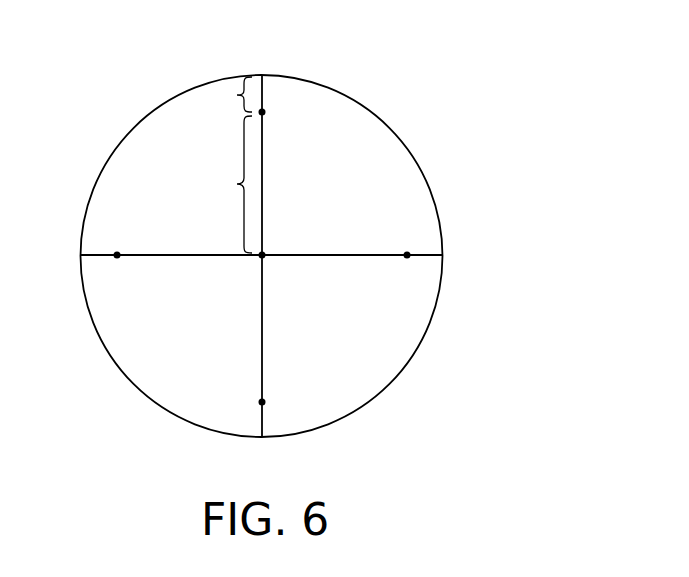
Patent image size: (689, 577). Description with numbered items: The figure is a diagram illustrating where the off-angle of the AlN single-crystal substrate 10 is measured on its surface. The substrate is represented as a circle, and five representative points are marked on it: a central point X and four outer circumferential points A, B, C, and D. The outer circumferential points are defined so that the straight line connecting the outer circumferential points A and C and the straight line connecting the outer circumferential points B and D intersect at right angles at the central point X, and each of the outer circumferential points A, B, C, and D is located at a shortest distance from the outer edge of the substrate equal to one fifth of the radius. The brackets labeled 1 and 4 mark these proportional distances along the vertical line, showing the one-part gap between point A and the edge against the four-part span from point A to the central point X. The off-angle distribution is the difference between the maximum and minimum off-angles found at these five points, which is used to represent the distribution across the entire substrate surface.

The AlN single-crystal substrate 10 is at (462, 99).
The first distance 1 is at (236, 95).
The second distance 4 is at (236, 184).
The outer circumferential point A is at (262, 112).
The outer circumferential point B is at (117, 255).
The outer circumferential point C is at (262, 402).
The outer circumferential point D is at (407, 255).
The central point X is at (262, 255).